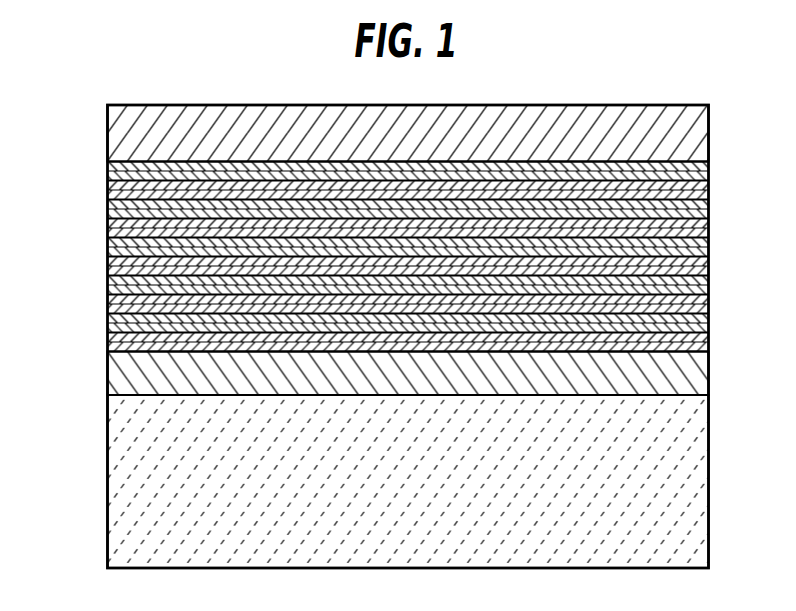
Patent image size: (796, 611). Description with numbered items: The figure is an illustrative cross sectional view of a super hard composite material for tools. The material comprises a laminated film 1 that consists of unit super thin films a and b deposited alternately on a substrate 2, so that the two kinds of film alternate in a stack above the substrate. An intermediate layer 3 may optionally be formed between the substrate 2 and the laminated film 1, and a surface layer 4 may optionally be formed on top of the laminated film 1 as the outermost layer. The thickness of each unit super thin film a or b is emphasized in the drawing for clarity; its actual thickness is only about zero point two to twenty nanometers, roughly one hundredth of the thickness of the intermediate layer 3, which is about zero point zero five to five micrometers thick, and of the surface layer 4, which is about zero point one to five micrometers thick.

The laminated film 1 is at (712, 157).
The substrate 2 is at (672, 478).
The intermediate layer 3 is at (673, 370).
The surface layer 4 is at (690, 138).
The unit super thin film a is at (108, 171).
The unit super thin film b is at (108, 193).